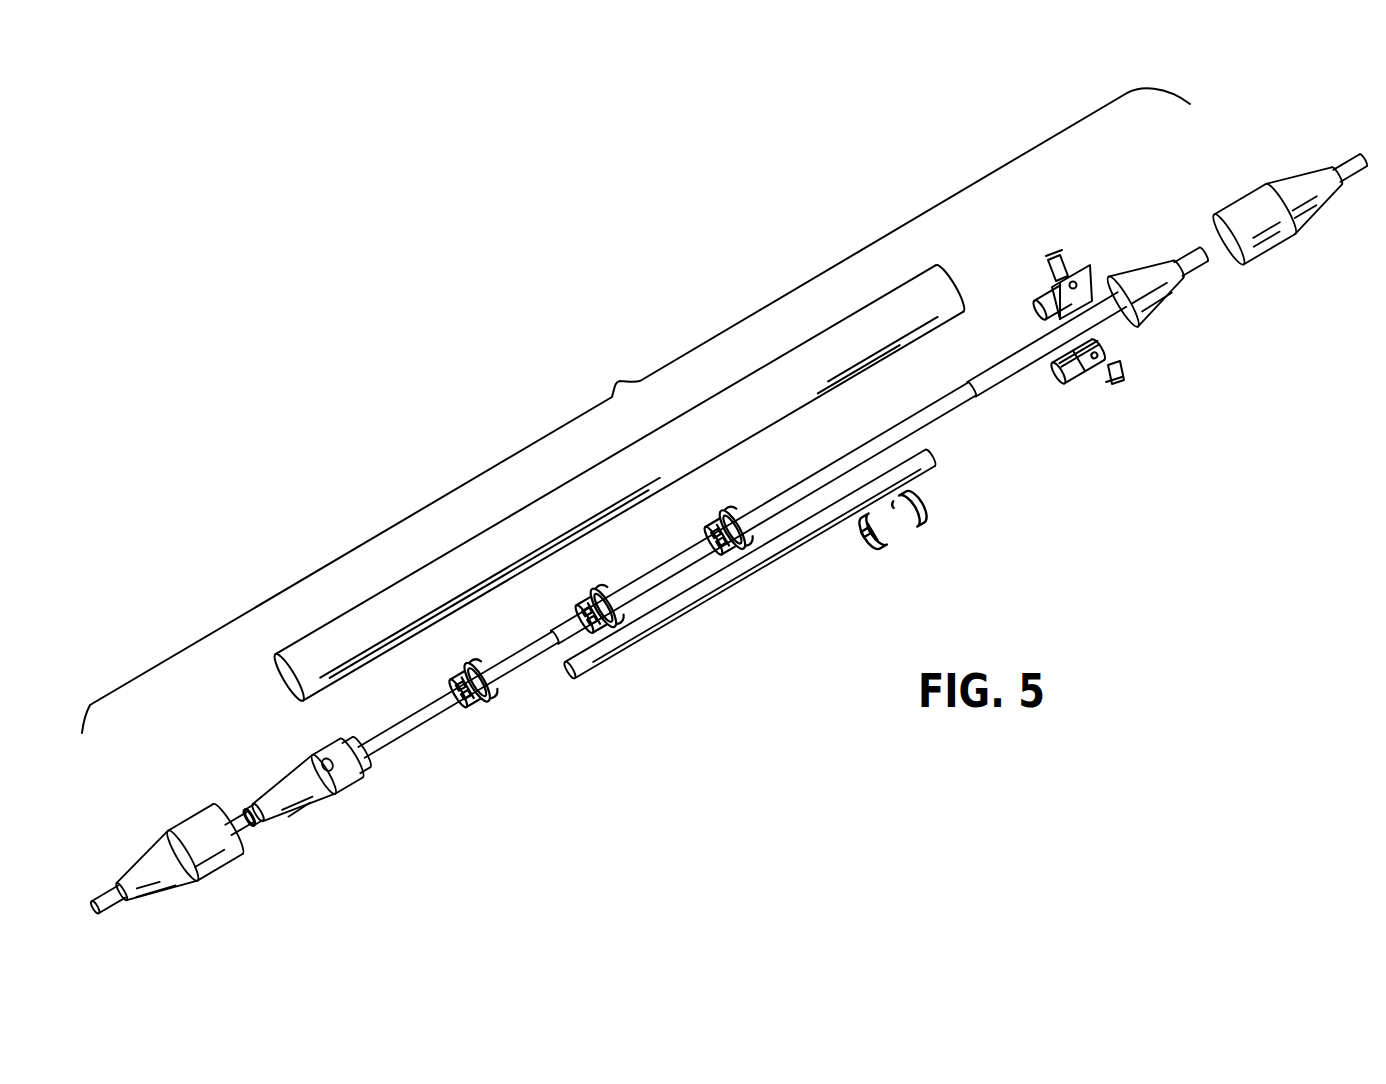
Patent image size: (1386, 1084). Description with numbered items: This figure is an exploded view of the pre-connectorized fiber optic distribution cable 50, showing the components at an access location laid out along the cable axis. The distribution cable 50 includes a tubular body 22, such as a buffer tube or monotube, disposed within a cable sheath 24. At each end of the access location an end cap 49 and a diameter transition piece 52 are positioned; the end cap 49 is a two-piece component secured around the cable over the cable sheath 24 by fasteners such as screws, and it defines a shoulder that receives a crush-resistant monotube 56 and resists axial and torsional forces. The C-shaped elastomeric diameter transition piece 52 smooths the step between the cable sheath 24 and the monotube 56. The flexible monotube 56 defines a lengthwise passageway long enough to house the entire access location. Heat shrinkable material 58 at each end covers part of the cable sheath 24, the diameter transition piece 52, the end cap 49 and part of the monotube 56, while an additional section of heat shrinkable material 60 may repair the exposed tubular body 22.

The pre-connectorized fiber optic distribution cable 50 is at (636, 410).
The crush-resistant monotube 56 is at (417, 590).
The heat shrinkable material 60 is at (703, 592).
The tubular body 22 is at (575, 630).
The cable sheath 24 is at (110, 897).
The heat shrinkable material 58 is at (212, 852).
The diameter transition piece 52 is at (300, 792).
The end cap 49 is at (353, 773).